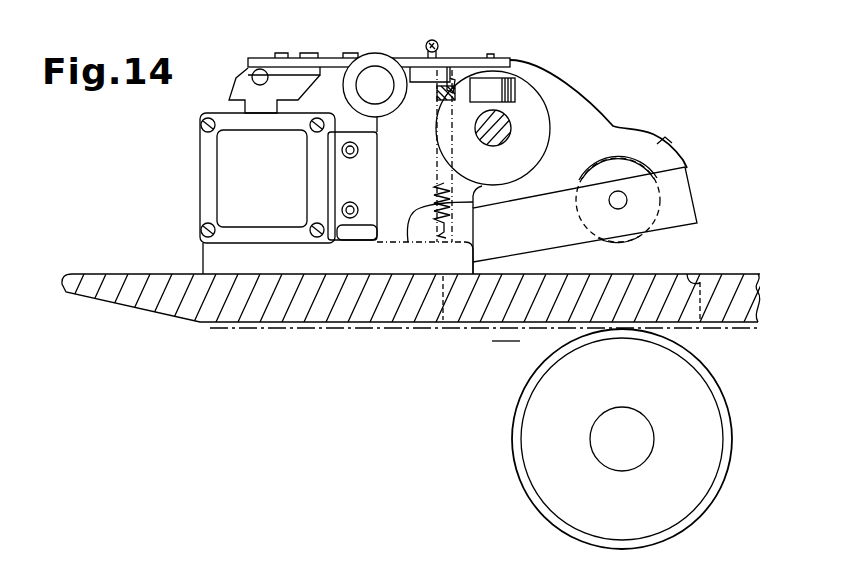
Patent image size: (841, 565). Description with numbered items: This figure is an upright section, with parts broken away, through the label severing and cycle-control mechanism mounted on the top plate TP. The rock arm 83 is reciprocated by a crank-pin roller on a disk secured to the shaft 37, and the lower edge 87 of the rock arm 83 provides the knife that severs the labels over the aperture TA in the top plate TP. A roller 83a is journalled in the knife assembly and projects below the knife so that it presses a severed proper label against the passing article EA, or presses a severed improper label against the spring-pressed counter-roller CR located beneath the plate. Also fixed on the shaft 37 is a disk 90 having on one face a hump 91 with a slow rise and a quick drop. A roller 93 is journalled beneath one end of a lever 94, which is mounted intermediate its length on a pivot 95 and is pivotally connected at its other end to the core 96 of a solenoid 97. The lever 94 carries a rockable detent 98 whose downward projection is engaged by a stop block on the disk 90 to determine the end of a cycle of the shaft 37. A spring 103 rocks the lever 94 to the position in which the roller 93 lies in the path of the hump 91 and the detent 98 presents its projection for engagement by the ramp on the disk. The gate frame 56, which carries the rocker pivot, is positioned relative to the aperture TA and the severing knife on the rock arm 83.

The lever 94 is at (333, 62).
The pivot 95 is at (378, 84).
The rockable detent 98 is at (435, 73).
The roller 93 is at (507, 93).
The rock arm 83 is at (618, 132).
The gate frame 56 is at (726, 111).
The roller 83a is at (635, 168).
The shaft 37 is at (510, 127).
The disk 90 is at (525, 150).
The hump 91 is at (457, 103).
The spring 103 is at (432, 222).
The solenoid 97 is at (205, 181).
The core 96 is at (238, 82).
The lower edge 87 is at (695, 226).
The aperture TA is at (700, 272).
The top plate TP is at (128, 298).
The passing article EA is at (392, 328).
The counter-roller CR is at (698, 485).